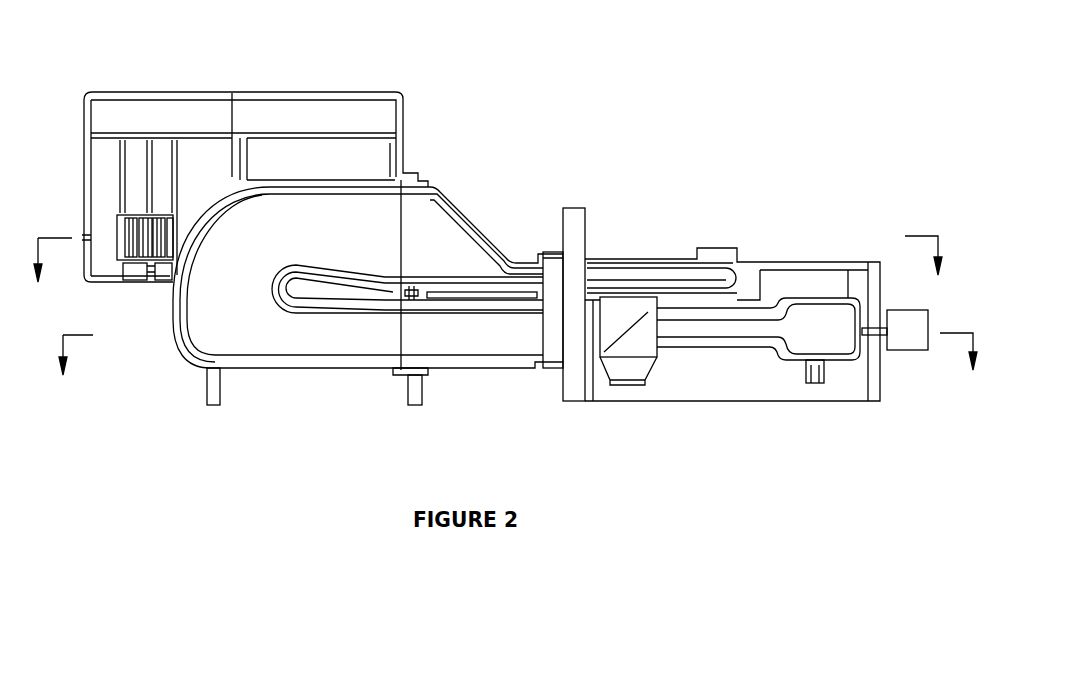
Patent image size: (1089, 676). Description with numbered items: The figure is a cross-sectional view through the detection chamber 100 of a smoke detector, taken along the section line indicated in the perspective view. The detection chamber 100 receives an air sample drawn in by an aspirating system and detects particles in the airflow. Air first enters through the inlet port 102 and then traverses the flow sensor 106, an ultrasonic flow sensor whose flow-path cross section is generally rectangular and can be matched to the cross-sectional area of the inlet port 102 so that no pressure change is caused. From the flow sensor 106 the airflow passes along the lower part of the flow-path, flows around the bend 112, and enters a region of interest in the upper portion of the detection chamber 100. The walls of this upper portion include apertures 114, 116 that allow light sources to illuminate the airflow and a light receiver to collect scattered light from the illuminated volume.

The detection chamber 100 is at (796, 84).
The inlet port 102 is at (837, 326).
The flow sensor 106 is at (705, 350).
The bend 112 is at (212, 305).
The aperture 114 is at (277, 185).
The aperture 116 is at (198, 223).